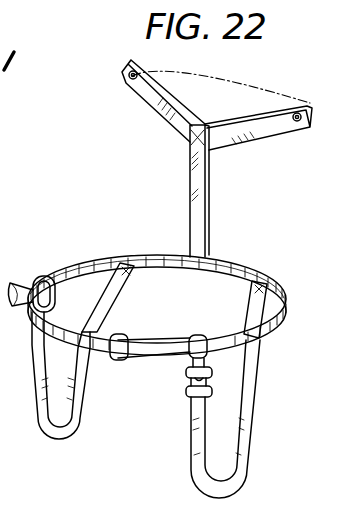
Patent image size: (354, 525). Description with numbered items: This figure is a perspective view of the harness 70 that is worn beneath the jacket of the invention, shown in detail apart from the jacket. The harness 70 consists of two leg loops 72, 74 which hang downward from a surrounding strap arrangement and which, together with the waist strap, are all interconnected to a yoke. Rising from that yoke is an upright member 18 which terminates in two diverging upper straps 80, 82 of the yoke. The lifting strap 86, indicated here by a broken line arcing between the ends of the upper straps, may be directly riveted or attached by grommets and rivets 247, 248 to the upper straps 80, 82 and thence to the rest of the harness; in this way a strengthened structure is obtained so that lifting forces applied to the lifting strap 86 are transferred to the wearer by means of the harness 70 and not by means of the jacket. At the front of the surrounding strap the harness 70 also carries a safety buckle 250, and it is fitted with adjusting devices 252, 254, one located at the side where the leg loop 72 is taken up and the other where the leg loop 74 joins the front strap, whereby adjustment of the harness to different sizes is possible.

The post 18 is at (207, 208).
The harness 70 is at (167, 368).
The leg loop 72 is at (50, 441).
The leg loop 74 is at (237, 490).
The upper strap 80 is at (163, 100).
The upper strap 82 is at (263, 133).
The lifting strap 86 is at (192, 50).
The grommet and rivet 247 is at (127, 76).
The grommet and rivet 248 is at (307, 106).
The safety buckle 250 is at (112, 338).
The adjusting device 252 is at (53, 303).
The adjusting device 254 is at (213, 382).